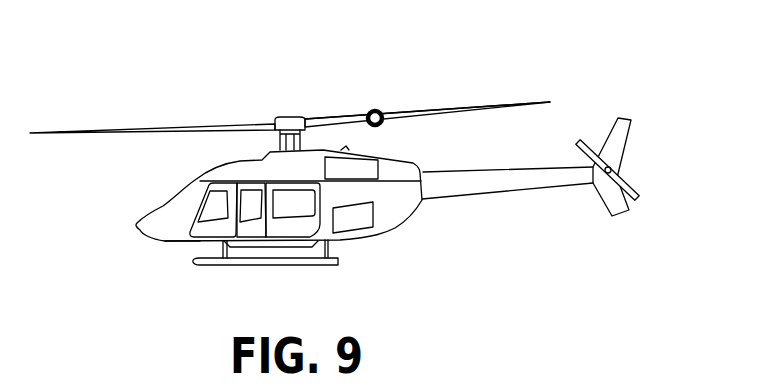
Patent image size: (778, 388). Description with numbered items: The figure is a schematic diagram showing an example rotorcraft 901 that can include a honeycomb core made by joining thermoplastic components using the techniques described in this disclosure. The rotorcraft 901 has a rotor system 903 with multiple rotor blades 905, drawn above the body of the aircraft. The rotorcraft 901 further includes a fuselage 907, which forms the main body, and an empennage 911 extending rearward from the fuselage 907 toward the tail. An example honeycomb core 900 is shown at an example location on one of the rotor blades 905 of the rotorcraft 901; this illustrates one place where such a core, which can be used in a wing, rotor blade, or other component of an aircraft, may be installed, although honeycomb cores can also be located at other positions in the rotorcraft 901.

The rotorcraft 901 is at (367, 159).
The rotor system 903 is at (300, 104).
The rotor blade 905 is at (503, 102).
The honeycomb core 900 is at (387, 111).
The empennage 911 is at (491, 193).
The fuselage 907 is at (180, 242).